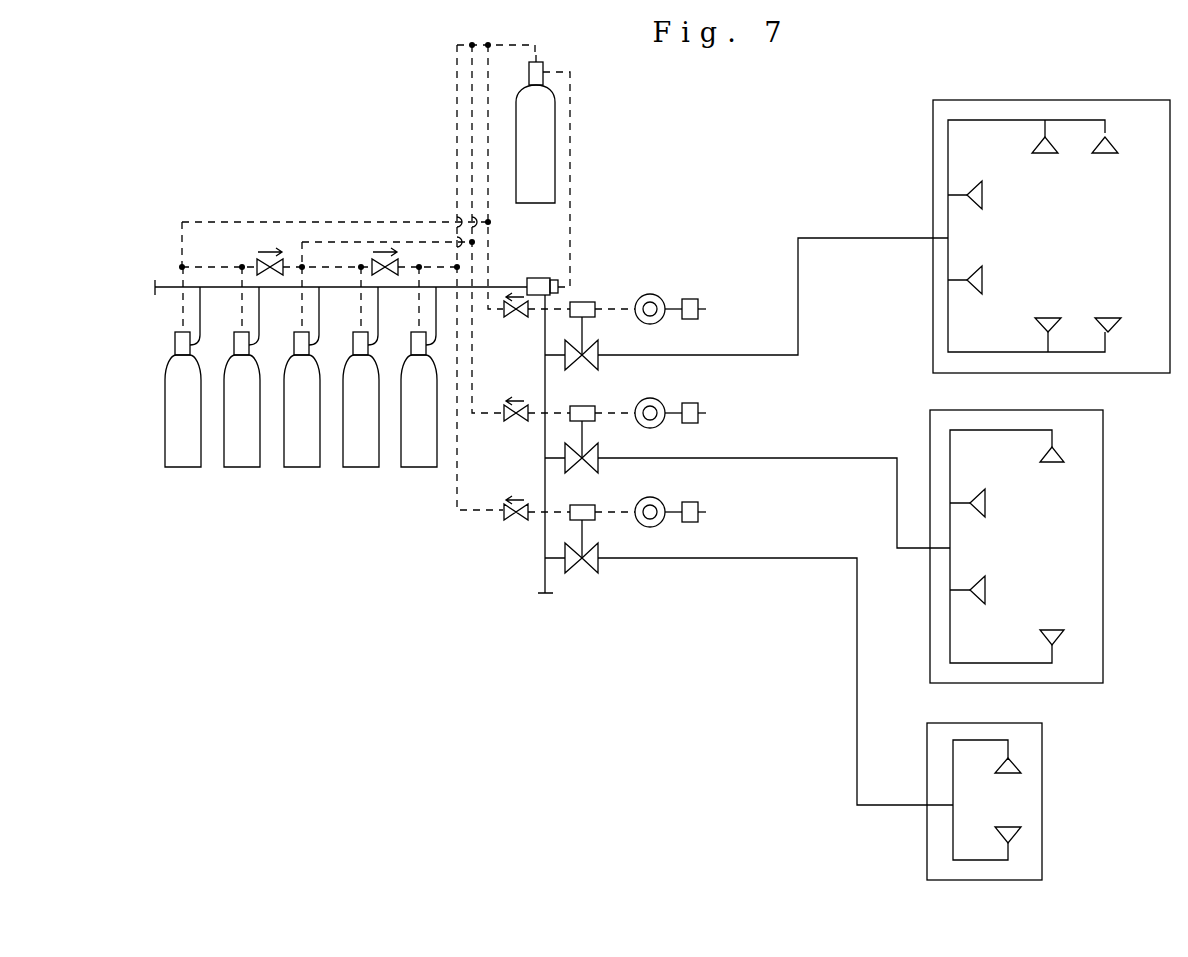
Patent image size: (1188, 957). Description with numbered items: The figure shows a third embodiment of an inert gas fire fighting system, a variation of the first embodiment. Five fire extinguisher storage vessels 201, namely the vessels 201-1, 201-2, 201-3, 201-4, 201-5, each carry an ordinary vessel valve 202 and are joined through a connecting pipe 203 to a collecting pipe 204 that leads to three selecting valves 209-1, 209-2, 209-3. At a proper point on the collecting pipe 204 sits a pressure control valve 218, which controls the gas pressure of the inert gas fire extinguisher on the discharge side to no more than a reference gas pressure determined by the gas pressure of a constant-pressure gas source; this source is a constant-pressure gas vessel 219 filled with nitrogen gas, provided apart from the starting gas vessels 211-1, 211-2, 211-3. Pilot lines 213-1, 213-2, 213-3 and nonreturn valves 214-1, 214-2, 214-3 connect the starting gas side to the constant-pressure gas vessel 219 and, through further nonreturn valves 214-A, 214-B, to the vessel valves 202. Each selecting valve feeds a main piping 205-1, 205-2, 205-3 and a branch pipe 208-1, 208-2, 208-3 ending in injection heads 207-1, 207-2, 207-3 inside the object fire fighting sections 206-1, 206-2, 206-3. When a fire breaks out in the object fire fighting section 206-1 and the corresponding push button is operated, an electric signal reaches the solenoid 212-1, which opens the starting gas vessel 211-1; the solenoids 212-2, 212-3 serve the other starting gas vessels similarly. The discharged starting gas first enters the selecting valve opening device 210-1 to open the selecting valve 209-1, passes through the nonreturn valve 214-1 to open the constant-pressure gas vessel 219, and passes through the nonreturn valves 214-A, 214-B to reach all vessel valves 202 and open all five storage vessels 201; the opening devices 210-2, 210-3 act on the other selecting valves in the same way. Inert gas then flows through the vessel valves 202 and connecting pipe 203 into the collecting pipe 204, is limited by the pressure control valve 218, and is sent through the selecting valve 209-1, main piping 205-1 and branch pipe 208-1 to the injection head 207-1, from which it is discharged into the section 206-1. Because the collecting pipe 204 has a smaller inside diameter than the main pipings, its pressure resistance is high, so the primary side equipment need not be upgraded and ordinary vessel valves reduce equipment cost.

The fire extinguisher storage vessels 201 is at (269, 431).
The fire extinguisher storage vessel 201-1 is at (177, 462).
The fire extinguisher storage vessel 201-2 is at (236, 462).
The fire extinguisher storage vessel 201-3 is at (296, 462).
The fire extinguisher storage vessel 201-4 is at (355, 462).
The fire extinguisher storage vessel 201-5 is at (413, 462).
The vessel valve 202 is at (175, 342).
The connecting pipe 203 is at (200, 312).
The collecting pipe 204 is at (215, 287).
The main piping 205-1 is at (800, 340).
The main piping 205-2 is at (826, 457).
The main piping 205-3 is at (824, 557).
The object fire fighting section 206-1 is at (1007, 236).
The object fire fighting section 206-2 is at (1027, 530).
The object fire fighting section 206-3 is at (993, 787).
The injection head 207-1 is at (1105, 153).
The injection head 207-2 is at (1064, 455).
The injection head 207-3 is at (1021, 765).
The branch pipe 208-1 is at (1007, 120).
The branch pipe 208-2 is at (1002, 430).
The branch pipe 208-3 is at (953, 782).
The selecting valve 209-1 is at (562, 362).
The selecting valve 209-2 is at (586, 468).
The selecting valve 209-3 is at (588, 572).
The selecting valve opening device 210-1 is at (594, 303).
The selecting valve opening device 210-2 is at (586, 407).
The selecting valve opening device 210-3 is at (568, 512).
The starting gas vessel 211-1 is at (663, 318).
The starting gas vessel 211-2 is at (663, 422).
The starting gas vessel 211-3 is at (663, 522).
The solenoid 212-1 is at (706, 309).
The solenoid 212-2 is at (706, 413).
The solenoid 212-3 is at (706, 512).
The first pilot pipe 213-1 is at (488, 262).
The second pilot pipe 213-2 is at (497, 175).
The third pilot pipe 213-3 is at (440, 265).
The nonreturn valve 214-A is at (287, 258).
The nonreturn valve 214-B is at (397, 258).
The nonreturn valve 214-1 is at (512, 318).
The nonreturn valve 214-2 is at (516, 422).
The nonreturn valve 214-3 is at (512, 522).
The pressure control valve 218 is at (543, 278).
The constant-pressure gas vessel 219 is at (550, 155).